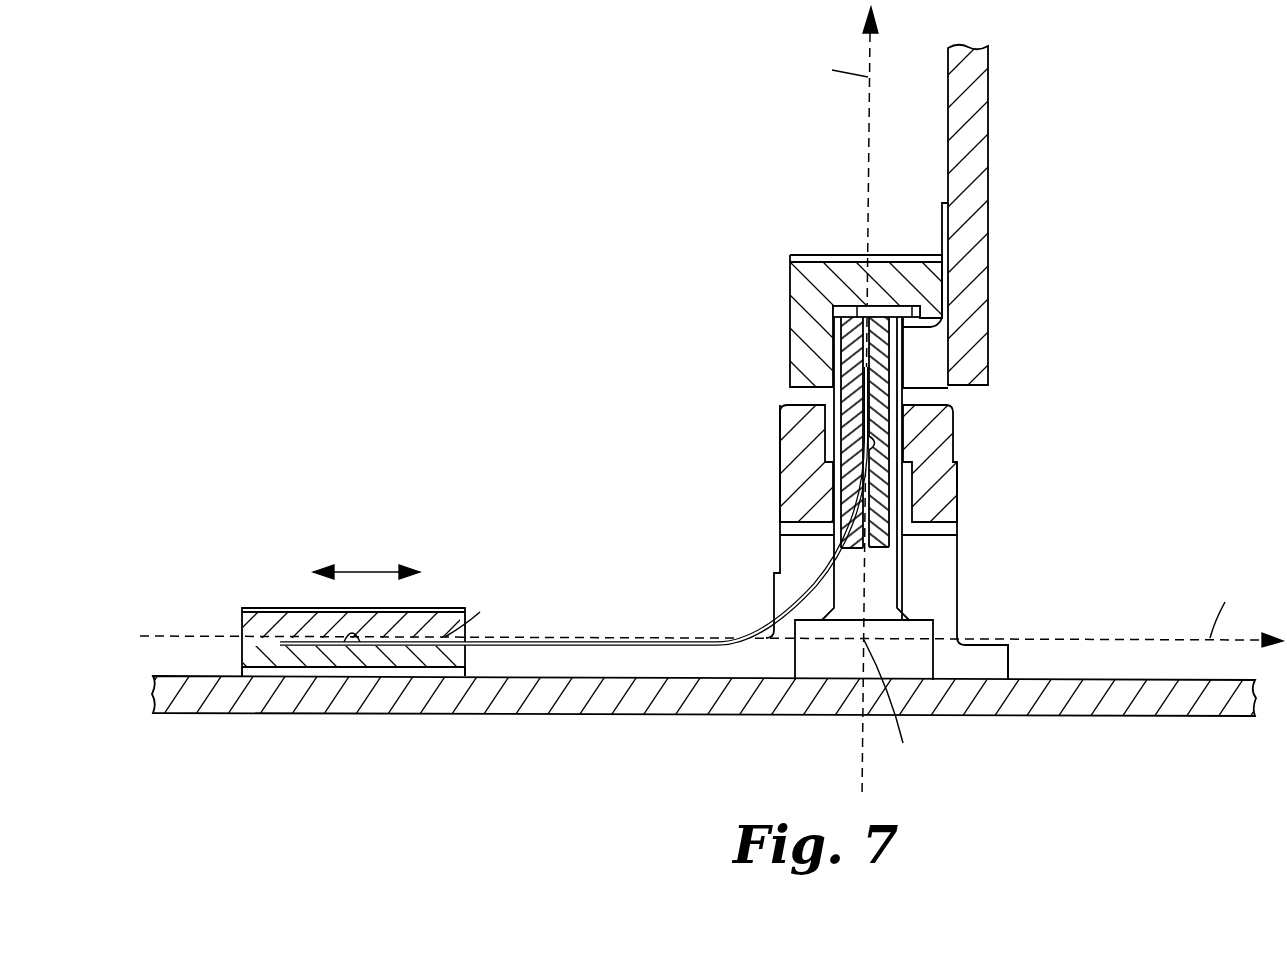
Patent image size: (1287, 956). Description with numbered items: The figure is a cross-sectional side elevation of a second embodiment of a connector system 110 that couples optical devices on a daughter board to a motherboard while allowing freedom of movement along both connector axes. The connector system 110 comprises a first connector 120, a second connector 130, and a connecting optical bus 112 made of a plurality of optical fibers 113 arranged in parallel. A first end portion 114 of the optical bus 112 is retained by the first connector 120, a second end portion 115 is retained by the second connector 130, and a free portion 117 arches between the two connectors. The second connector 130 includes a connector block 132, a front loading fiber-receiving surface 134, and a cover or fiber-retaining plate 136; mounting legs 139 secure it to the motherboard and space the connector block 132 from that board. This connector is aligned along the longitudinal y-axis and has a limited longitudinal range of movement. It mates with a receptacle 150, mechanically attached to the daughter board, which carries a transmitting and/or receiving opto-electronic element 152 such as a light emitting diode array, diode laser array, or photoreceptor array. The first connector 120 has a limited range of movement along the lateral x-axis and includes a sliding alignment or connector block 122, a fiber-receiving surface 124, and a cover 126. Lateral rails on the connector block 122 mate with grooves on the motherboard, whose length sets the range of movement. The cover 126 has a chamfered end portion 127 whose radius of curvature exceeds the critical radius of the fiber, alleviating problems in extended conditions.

The connector system 110 is at (605, 288).
The connecting optical bus 112 is at (583, 644).
The optical fibers 113 is at (670, 643).
The first end portion 114 is at (435, 645).
The second end portion 115 is at (838, 380).
The free portion 117 is at (800, 602).
The first connector 120 is at (215, 603).
The sliding alignment or connector block 122 is at (252, 667).
The fiber-receiving surface 124 is at (350, 640).
The cover 126 is at (270, 620).
The chamfered end portion 127 is at (447, 636).
The second connector 130 is at (1022, 406).
The connector block 132 is at (885, 410).
The front loading fiber-receiving surface 134 is at (868, 440).
The cover or fiber-retaining plate 136 is at (842, 490).
The mounting legs 139 is at (987, 655).
The receptacle 150 is at (802, 305).
The opto-electronic element 152 is at (885, 308).